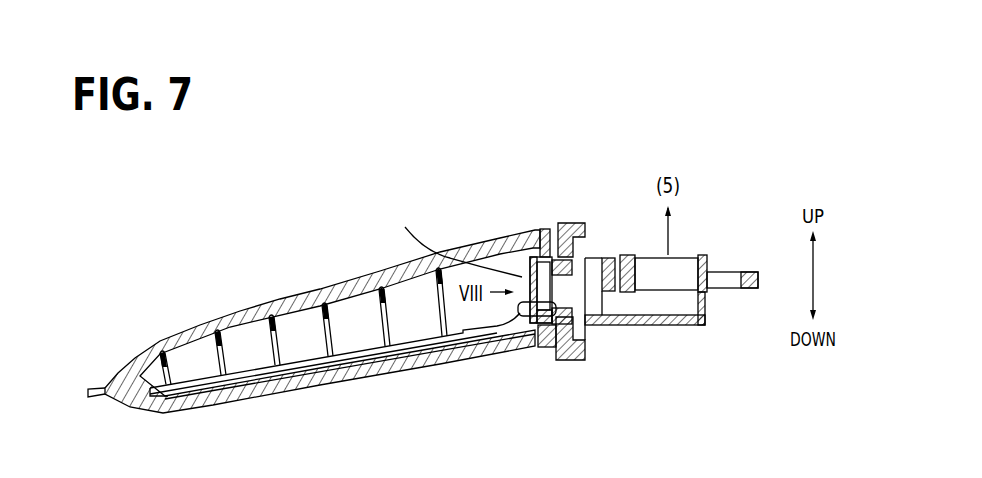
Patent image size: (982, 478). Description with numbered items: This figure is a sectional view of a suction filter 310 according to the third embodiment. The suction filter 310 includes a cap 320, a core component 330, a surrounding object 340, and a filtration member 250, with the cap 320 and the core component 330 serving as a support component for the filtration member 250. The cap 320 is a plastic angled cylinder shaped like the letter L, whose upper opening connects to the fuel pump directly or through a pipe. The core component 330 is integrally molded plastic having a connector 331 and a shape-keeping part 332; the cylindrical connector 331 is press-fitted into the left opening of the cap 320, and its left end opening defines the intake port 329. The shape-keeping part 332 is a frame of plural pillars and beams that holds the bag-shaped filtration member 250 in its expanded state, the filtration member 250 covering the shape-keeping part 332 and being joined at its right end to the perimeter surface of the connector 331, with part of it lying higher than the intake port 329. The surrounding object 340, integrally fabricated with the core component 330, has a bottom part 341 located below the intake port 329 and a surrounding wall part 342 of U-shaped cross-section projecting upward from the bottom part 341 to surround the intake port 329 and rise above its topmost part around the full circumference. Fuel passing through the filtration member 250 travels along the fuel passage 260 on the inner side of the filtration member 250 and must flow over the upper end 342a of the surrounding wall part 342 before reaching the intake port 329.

The suction filter 310 is at (449, 200).
The filtration member 250 is at (307, 292).
The fuel passage 260 is at (487, 312).
The intake port 329 is at (453, 237).
The core component 330 is at (349, 362).
The shape-keeping part 332 is at (268, 314).
The surrounding object 340 is at (520, 268).
The upper end of the surrounding wall part 342a is at (540, 260).
The surrounding wall part 342 is at (520, 322).
The bottom part 341 is at (541, 333).
The connector 331 is at (590, 257).
The cap 320 is at (710, 282).